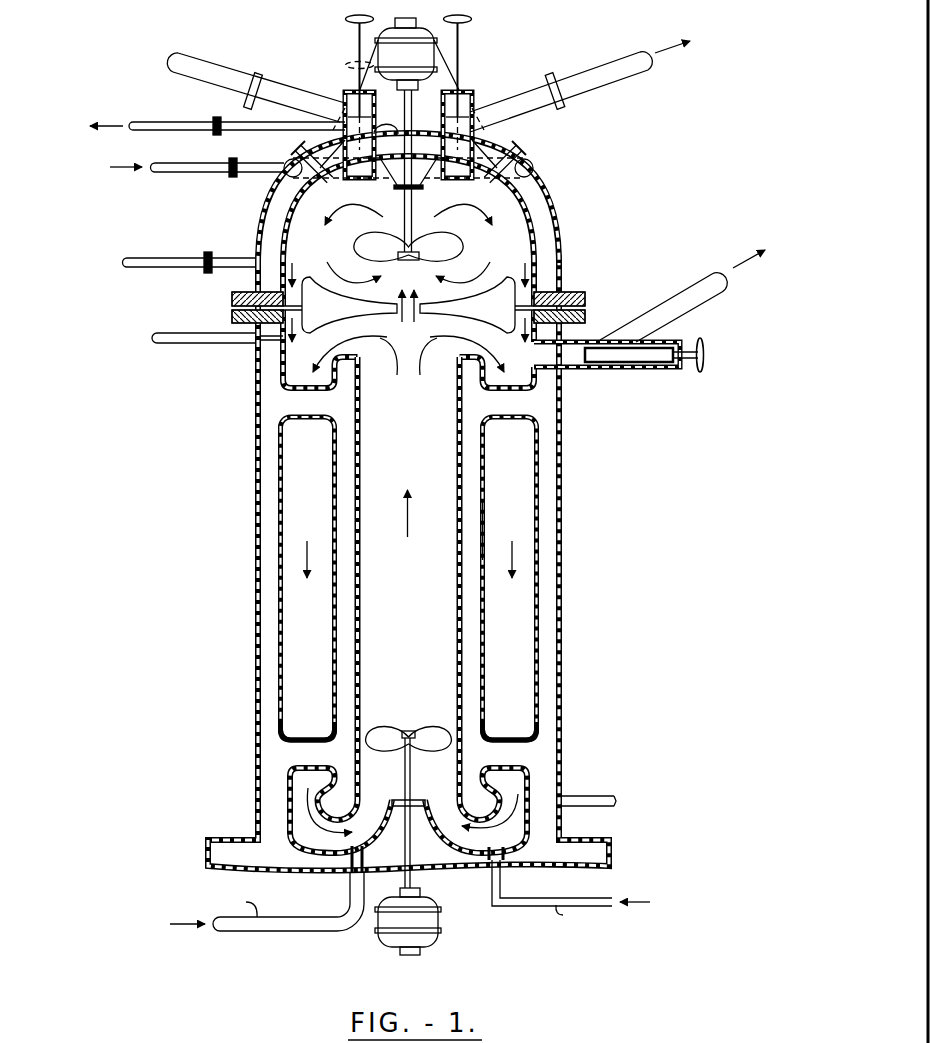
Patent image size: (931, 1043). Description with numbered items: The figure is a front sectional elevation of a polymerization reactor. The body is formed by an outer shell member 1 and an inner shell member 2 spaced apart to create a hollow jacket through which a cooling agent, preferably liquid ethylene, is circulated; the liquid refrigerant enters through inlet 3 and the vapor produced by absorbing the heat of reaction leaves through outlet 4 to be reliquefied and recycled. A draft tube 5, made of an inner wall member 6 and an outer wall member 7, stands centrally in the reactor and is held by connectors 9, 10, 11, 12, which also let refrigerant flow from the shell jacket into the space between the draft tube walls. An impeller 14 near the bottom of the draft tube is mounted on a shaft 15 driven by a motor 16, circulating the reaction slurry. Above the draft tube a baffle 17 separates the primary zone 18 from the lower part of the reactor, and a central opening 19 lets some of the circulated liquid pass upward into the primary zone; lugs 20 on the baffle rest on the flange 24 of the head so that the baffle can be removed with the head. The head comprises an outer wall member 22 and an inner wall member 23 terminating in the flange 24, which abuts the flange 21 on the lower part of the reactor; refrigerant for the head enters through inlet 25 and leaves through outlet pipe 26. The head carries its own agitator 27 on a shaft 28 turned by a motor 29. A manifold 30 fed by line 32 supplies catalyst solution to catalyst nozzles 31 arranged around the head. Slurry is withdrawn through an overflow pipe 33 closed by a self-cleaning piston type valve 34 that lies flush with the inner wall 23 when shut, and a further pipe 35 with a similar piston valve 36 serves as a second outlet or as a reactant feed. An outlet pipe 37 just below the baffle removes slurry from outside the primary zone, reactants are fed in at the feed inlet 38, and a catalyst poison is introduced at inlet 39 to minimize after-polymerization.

The outer shell member 1 is at (562, 556).
The inner shell member 2 is at (537, 531).
The inlet 3 is at (580, 796).
The outlet 4 is at (190, 333).
The draft tube 5 is at (414, 357).
The inner wall member 6 is at (457, 553).
The outer wall member 7 is at (497, 511).
The connector 9 is at (493, 739).
The connector 10 is at (521, 425).
The connector 11 is at (319, 425).
The connector 12 is at (325, 733).
The impeller 14 is at (370, 738).
The shaft 15 is at (412, 896).
The motor 16 is at (440, 935).
The baffle 17 is at (360, 318).
The primary zone 18 is at (408, 243).
The opening 19 is at (420, 318).
The lugs or supporting means 20 is at (538, 285).
The flange 21 is at (585, 316).
The outer wall member 22 is at (553, 238).
The inner wall member 23 is at (530, 217).
The flange 24 is at (585, 298).
The inlet 25 is at (180, 258).
The outlet pipe 26 is at (193, 122).
The agitator 27 is at (465, 246).
The shaft 28 is at (410, 186).
The motor 29 is at (434, 35).
The manifold 30 is at (531, 163).
The catalyst nozzles 31 is at (337, 172).
The line 32 is at (200, 172).
The overflow pipe 33 is at (608, 82).
The piston type valve 34 is at (460, 93).
The pipe 35 is at (203, 60).
The piston valve 36 is at (347, 93).
The outlet pipe 37 is at (690, 288).
The feed inlet 38 is at (276, 925).
The inlet 39 is at (542, 897).